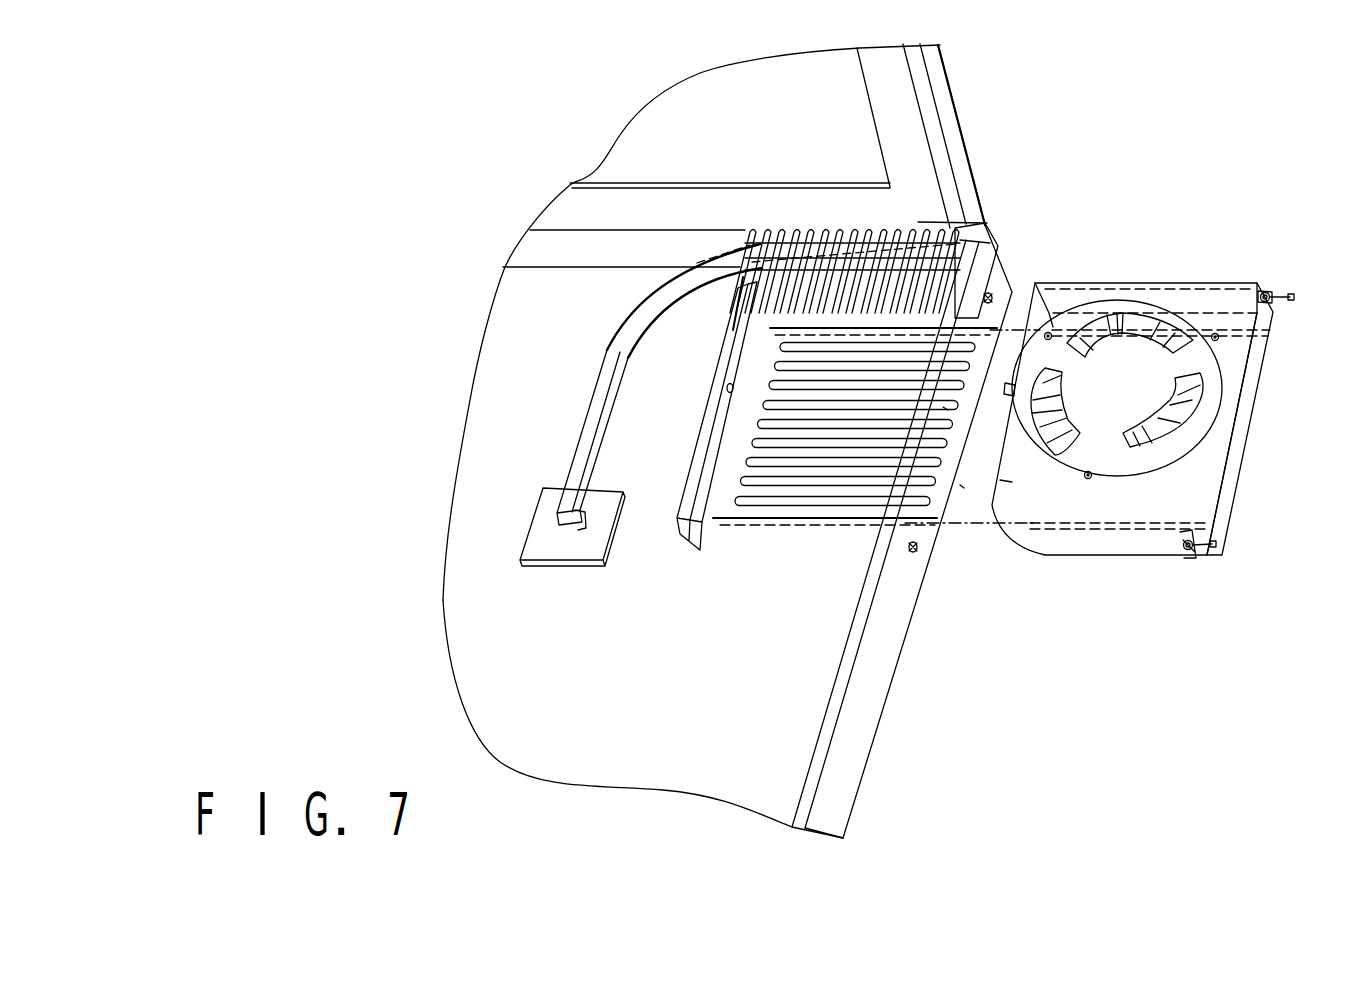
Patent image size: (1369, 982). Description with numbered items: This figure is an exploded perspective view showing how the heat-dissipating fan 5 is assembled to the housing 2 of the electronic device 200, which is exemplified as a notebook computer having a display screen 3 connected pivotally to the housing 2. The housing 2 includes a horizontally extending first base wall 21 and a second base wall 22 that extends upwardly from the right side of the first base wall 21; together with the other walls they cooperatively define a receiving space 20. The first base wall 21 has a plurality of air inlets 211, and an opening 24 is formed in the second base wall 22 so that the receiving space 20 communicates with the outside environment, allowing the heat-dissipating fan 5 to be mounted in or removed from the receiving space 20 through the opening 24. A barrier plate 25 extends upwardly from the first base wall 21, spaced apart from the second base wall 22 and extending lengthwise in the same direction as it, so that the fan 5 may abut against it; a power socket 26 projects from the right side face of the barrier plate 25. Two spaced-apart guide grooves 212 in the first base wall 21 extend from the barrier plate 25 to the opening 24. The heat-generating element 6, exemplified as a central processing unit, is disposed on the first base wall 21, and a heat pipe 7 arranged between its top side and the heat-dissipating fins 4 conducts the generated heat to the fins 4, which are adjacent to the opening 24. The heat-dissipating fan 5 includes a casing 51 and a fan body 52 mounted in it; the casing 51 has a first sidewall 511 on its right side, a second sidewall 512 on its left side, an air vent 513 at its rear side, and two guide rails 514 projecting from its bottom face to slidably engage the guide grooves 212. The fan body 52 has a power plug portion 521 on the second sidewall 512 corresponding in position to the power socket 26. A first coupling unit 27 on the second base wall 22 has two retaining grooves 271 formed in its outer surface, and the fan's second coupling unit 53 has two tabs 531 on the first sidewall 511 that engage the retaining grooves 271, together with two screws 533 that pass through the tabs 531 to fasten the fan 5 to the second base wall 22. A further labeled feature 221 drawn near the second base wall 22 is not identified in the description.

The electronic device 200 is at (610, 100).
The housing 2 is at (1007, 811).
The receiving space 20 is at (805, 603).
The first base wall 21 is at (607, 700).
The second base wall 22 is at (837, 813).
The opening of side wall 221 is at (943, 408).
The opening 24 is at (1042, 278).
The barrier plate 25 is at (713, 460).
The power socket 26 is at (727, 387).
The first coupling unit 27 is at (926, 573).
The retaining grooves 271 is at (913, 553).
The display screen 3 is at (837, 98).
The heat-dissipating fins 4 is at (883, 226).
The air inlets 211 is at (838, 372).
The guide grooves 212 is at (812, 232).
The heat-dissipating fan 5 is at (1201, 250).
The casing 51 is at (1182, 474).
The first sidewall 511 is at (1228, 424).
The second sidewall 512 is at (985, 478).
The air vent 513 is at (1150, 308).
The guide rails 514 is at (1246, 300).
The fan body 52 is at (1115, 408).
The power plug portion 521 is at (1005, 400).
The second coupling unit 53 is at (1220, 567).
The tabs 531 is at (1268, 294).
The screws 533 is at (1294, 297).
The heat-generating element 6 is at (567, 560).
The heat pipe 7 is at (640, 328).